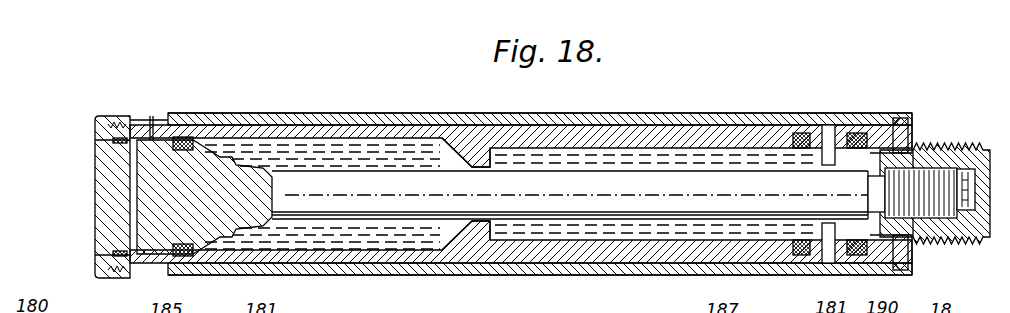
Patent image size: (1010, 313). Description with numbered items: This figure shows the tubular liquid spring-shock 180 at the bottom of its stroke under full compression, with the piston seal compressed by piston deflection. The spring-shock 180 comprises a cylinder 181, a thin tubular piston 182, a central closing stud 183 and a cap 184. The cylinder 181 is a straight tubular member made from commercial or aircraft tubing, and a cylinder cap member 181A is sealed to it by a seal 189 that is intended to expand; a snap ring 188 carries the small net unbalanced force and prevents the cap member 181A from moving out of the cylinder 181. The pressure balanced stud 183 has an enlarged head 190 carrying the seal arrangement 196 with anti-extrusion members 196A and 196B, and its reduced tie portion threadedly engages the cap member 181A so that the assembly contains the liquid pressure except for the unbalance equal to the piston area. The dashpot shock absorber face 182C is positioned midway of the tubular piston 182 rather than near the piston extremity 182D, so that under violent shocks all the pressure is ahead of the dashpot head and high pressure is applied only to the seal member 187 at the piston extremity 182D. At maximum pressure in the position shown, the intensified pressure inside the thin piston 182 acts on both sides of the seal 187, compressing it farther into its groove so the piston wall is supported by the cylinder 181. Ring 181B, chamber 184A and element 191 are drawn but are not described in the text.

The spring-shock 180 is at (692, 104).
The cylinder 181 is at (727, 268).
The cylinder cap member 181A is at (905, 154).
The spacer ring 181B is at (848, 240).
The piston 182 is at (257, 131).
The dashpot shock absorber face 182C is at (480, 224).
The piston extremity 182D is at (830, 125).
The central closing stud 183 is at (355, 158).
The cap 184 is at (95, 166).
The lower fluid chamber 184A is at (630, 234).
The seal member 187 is at (799, 132).
The snap ring 188 is at (911, 127).
The seal 189 is at (862, 118).
The enlarged head 190 is at (152, 140).
The piston seal 191 is at (200, 140).
The seal arrangement 196 is at (178, 138).
The anti-extrusion member 196A is at (170, 276).
The anti-extrusion member 196B is at (183, 268).